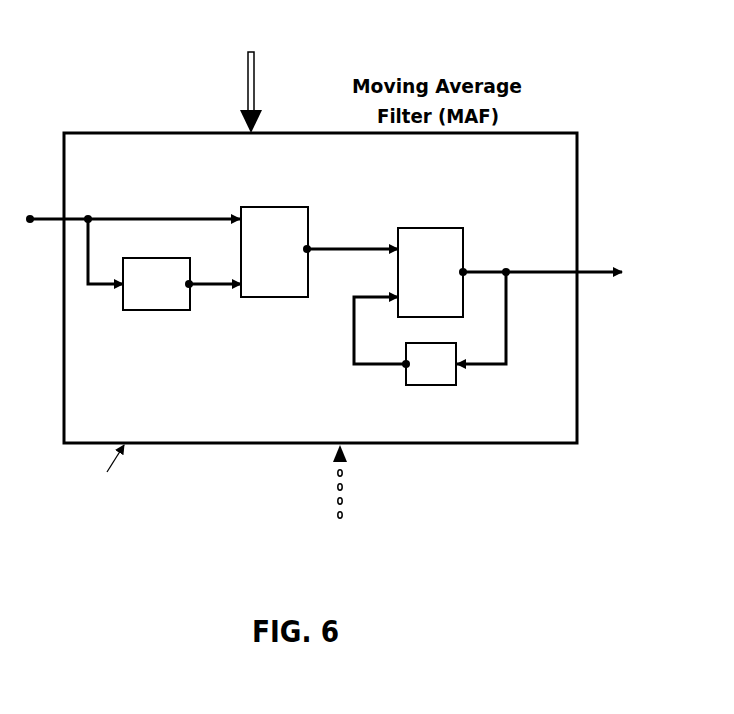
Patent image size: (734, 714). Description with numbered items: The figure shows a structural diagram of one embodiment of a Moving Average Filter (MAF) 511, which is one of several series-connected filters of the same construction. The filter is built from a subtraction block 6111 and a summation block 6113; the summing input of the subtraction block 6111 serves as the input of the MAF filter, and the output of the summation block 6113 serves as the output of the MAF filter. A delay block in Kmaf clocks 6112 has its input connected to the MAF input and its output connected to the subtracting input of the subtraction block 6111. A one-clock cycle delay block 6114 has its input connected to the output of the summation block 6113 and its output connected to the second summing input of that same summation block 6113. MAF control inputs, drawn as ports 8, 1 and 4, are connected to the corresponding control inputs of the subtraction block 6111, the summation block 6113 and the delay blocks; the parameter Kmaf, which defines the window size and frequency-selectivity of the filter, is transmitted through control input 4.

The Moving Average Filter (MAF) 511 is at (530, 133).
The subtraction block 6111 is at (298, 206).
The delay block in Kmaf clocks 6112 is at (155, 311).
The summation block 6113 is at (453, 227).
The one-clock cycle delay block 6114 is at (432, 387).
The power input port 8 is at (249, 93).
The clock input port 1 is at (112, 462).
The control input 4 is at (338, 490).